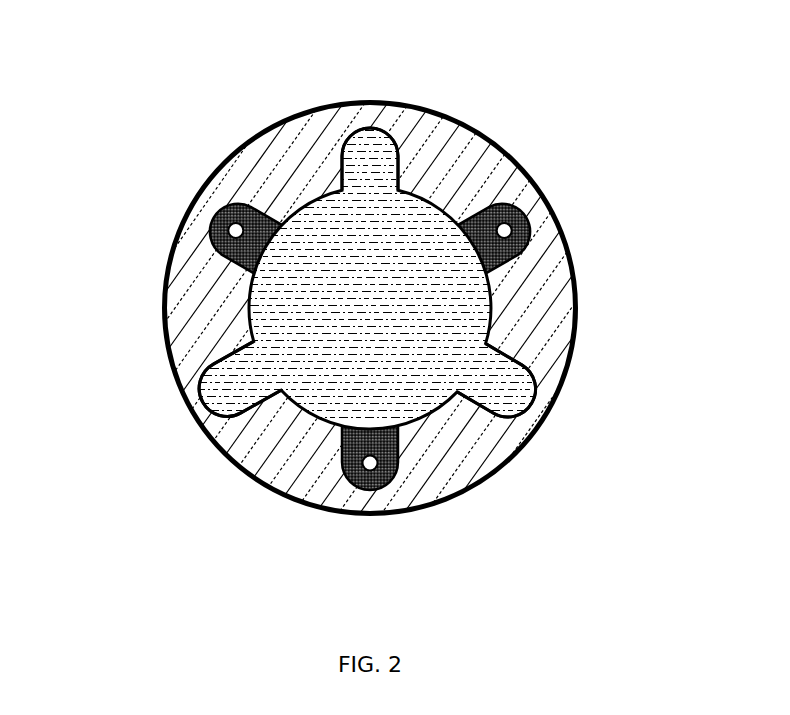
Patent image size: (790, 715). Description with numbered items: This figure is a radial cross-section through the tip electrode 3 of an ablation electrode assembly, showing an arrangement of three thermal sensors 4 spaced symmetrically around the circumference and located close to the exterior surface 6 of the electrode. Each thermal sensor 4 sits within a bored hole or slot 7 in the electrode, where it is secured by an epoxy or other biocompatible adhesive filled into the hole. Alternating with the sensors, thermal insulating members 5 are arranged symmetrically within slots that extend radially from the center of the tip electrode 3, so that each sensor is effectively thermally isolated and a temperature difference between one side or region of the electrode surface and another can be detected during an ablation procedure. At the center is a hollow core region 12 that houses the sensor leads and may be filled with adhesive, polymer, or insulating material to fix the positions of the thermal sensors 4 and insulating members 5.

The tip electrode 3 is at (295, 158).
The thermal sensors 4 is at (378, 471).
The thermal insulating members 5 is at (486, 380).
The exterior surface 6 is at (449, 115).
The bored hole or slot 7 is at (518, 199).
The hollow core region 12 is at (335, 307).